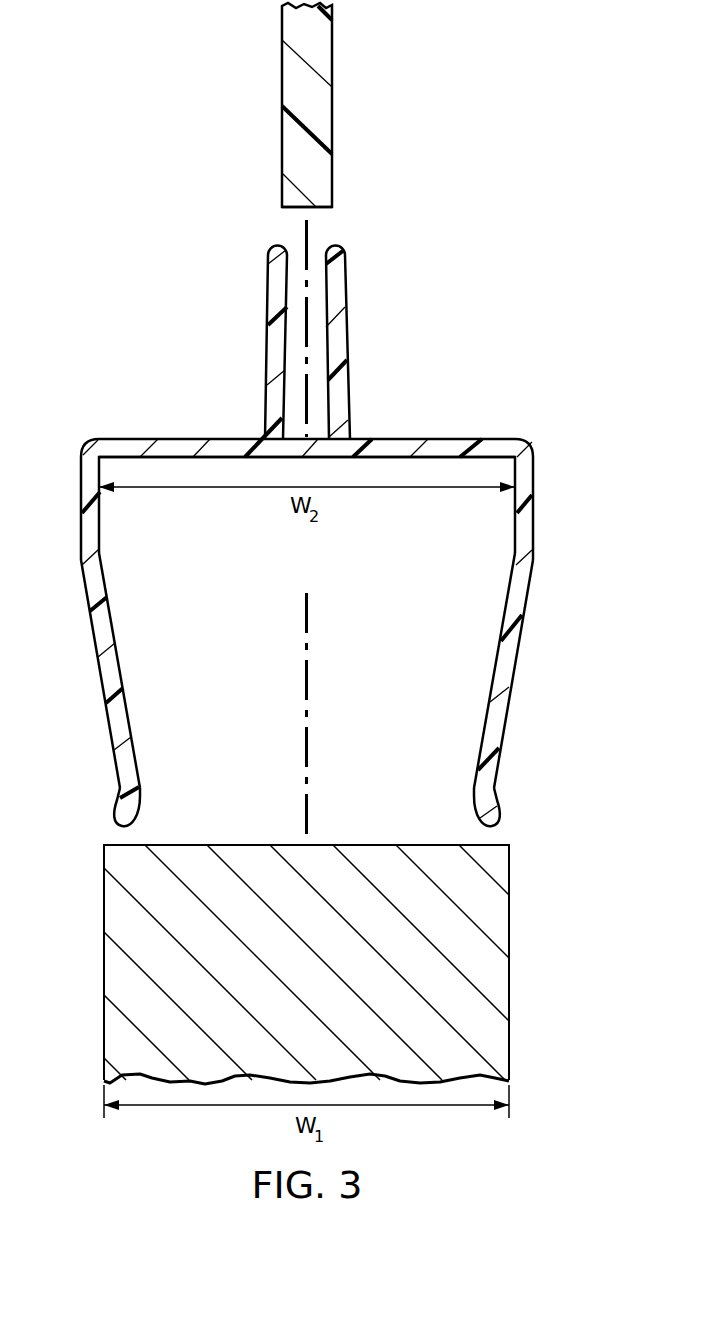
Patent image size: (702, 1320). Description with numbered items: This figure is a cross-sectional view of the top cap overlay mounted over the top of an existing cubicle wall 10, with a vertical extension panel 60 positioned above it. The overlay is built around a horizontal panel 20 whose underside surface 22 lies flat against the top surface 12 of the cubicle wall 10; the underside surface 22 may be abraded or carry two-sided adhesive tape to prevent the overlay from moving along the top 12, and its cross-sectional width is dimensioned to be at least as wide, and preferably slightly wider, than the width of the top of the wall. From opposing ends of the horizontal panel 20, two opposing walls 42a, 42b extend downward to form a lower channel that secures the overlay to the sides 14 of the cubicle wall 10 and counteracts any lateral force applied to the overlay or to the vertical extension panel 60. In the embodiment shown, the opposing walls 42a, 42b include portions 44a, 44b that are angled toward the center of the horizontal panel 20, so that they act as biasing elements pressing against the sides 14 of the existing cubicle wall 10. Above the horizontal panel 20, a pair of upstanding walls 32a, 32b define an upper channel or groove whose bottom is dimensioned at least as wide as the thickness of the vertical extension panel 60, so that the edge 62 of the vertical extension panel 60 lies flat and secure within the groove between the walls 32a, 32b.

The existing cubicle wall 10 is at (104, 895).
The top surface 12 is at (365, 844).
The sides 14 is at (104, 962).
The horizontal panel 20 is at (448, 438).
The underside surface 22 is at (221, 456).
The upper channel wall 32a is at (348, 335).
The upper channel wall 32b is at (267, 343).
The opposing wall 42a is at (520, 650).
The opposing wall 42b is at (101, 683).
The angled portion 44a is at (480, 725).
The angled portion 44b is at (131, 712).
The vertical extension panel 60 is at (282, 73).
The edge 62 is at (297, 207).